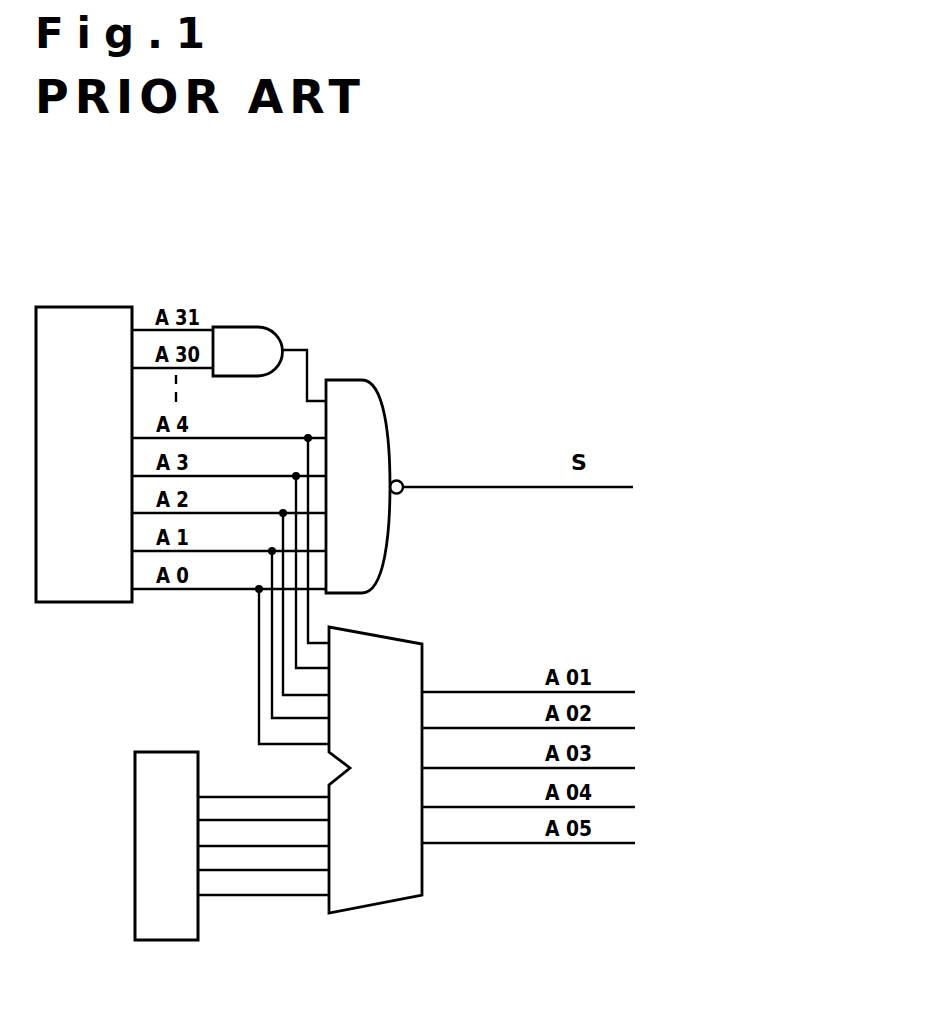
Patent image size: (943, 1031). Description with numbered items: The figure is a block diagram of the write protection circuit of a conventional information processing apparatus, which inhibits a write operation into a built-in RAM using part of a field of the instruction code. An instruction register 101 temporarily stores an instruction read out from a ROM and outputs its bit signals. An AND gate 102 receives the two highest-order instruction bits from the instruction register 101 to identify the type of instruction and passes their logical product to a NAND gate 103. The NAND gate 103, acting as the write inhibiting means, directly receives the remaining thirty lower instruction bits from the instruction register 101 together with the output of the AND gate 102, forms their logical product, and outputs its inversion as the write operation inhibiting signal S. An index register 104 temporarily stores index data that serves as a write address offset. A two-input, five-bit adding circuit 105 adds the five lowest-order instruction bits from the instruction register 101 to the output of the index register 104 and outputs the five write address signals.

The instruction register 101 is at (76, 306).
The AND gate 102 is at (246, 326).
The NAND gate 103 is at (355, 380).
The index register 104 is at (157, 752).
The adding circuit 105 is at (391, 638).